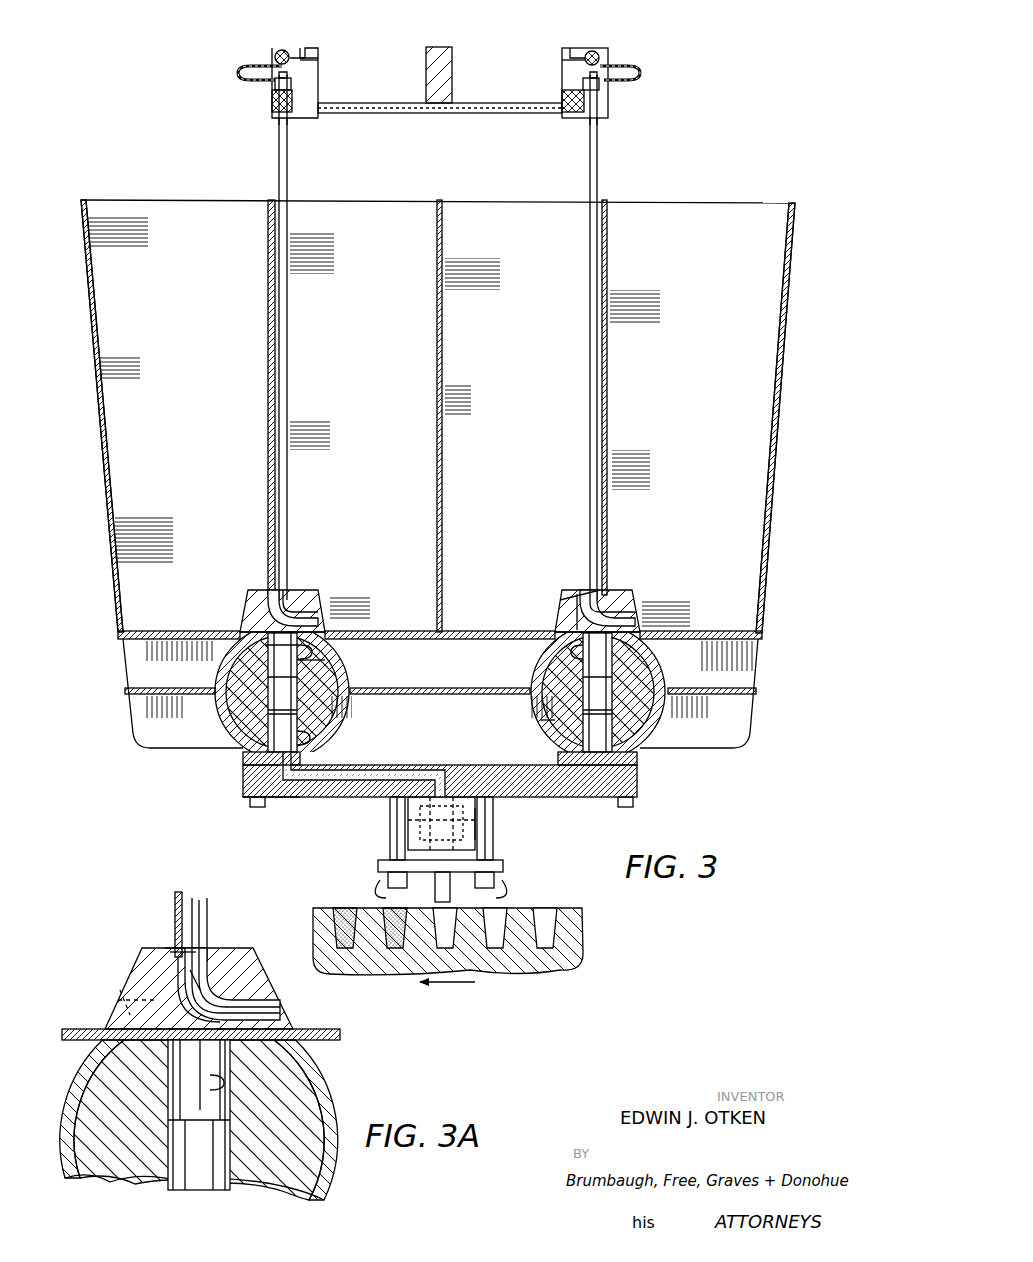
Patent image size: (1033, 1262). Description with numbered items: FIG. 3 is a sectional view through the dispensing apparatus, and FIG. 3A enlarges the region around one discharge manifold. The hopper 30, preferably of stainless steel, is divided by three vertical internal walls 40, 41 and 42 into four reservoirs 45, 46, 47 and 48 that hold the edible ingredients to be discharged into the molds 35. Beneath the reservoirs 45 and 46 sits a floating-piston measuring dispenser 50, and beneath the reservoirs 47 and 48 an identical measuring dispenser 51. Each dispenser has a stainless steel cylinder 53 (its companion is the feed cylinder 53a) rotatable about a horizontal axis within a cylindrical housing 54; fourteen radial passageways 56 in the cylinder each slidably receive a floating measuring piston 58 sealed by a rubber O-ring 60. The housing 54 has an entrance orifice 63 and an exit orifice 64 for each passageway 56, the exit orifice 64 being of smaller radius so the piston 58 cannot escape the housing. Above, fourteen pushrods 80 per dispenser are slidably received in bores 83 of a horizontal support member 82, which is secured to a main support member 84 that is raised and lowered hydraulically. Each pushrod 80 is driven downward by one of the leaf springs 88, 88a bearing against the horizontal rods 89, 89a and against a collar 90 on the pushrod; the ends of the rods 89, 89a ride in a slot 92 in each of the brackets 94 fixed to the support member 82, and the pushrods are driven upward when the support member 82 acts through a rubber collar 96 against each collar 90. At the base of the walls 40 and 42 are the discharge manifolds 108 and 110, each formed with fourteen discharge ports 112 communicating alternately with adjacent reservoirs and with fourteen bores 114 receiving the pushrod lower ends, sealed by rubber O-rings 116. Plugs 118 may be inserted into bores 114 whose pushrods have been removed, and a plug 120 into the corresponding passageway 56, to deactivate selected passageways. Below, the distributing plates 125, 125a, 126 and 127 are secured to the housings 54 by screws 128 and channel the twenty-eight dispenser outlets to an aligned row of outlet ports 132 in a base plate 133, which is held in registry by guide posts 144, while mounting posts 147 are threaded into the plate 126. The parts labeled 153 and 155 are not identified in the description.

In FIG. 3, the hopper 30 is at (103, 514).
In FIG. 3, the molds 35 is at (553, 935).
In FIG. 3, the internal wall 40 is at (270, 205).
In FIG. 3A, the internal wall 40 is at (174, 905).
In FIG. 3, the internal wall 41 is at (440, 205).
In FIG. 3, the internal wall 42 is at (610, 232).
In FIG. 3, the reservoir 45 is at (196, 313).
In FIG. 3, the reservoir 46 is at (384, 321).
In FIG. 3, the reservoir 47 is at (546, 321).
In FIG. 3, the reservoir 48 is at (724, 315).
In FIG. 3, the measuring dispenser 50 is at (288, 707).
In FIG. 3, the measuring dispenser 51 is at (615, 692).
In FIG. 3, the cylinder 53 is at (628, 662).
In FIG. 3, the feed cylinder 53a is at (335, 680).
In FIG. 3, the cylindrical housing 54 is at (222, 680).
In FIG. 3, the passageway 56 is at (318, 650).
In FIG. 3A, the passageway 56 is at (225, 1088).
In FIG. 3, the measuring piston 58 is at (300, 706).
In FIG. 3A, the measuring piston 58 is at (196, 1170).
In FIG. 3, the O-ring 60 is at (266, 706).
In FIG. 3, the entrance orifice 63 is at (262, 650).
In FIG. 3, the exit orifice 64 is at (300, 748).
In FIG. 3, the pushrod 80 is at (290, 162).
In FIG. 3A, the pushrod 80 is at (208, 905).
In FIG. 3, the support member 82 is at (488, 108).
In FIG. 3, the bore 83 is at (280, 120).
In FIG. 3, the main support member 84 is at (444, 60).
In FIG. 3, the leaf spring 88 is at (642, 70).
In FIG. 3, the leaf spring 88a is at (240, 70).
In FIG. 3, the horizontal rod 89 is at (602, 54).
In FIG. 3, the horizontal rod 89a is at (314, 26).
In FIG. 3, the collar 90 is at (292, 85).
In FIG. 3, the slot 92 is at (304, 50).
In FIG. 3, the bracket 94 is at (318, 70).
In FIG. 3, the rubber collar 96 is at (270, 100).
In FIG. 3, the discharge manifold 108 is at (302, 592).
In FIG. 3A, the discharge manifold 108 is at (232, 945).
In FIG. 3, the discharge manifold 110 is at (566, 590).
In FIG. 3, the discharge port 112 is at (315, 625).
In FIG. 3A, the discharge port 112 is at (116, 998).
In FIG. 3, the bore 114 is at (578, 606).
In FIG. 3A, the bore 114 is at (195, 988).
In FIG. 3A, the O-ring 116 is at (180, 955).
In FIG. 3, the plug 118 is at (586, 586).
In FIG. 3, the plug 120 is at (590, 680).
In FIG. 3, the distributing plate 125 is at (640, 766).
In FIG. 3, the distributing plate 125a is at (244, 766).
In FIG. 3, the distributing plate 126 is at (640, 790).
In FIG. 3, the distributing plate 127 is at (246, 796).
In FIG. 3, the screw 128 is at (257, 808).
In FIG. 3, the outlet port 132 is at (420, 812).
In FIG. 3, the base plate 133 is at (478, 812).
In FIG. 3, the guide post 144 is at (392, 890).
In FIG. 3, the mounting post 147 is at (390, 838).
In FIG. 3, the bar 153 is at (504, 866).
In FIG. 3, the hook 155 is at (382, 880).